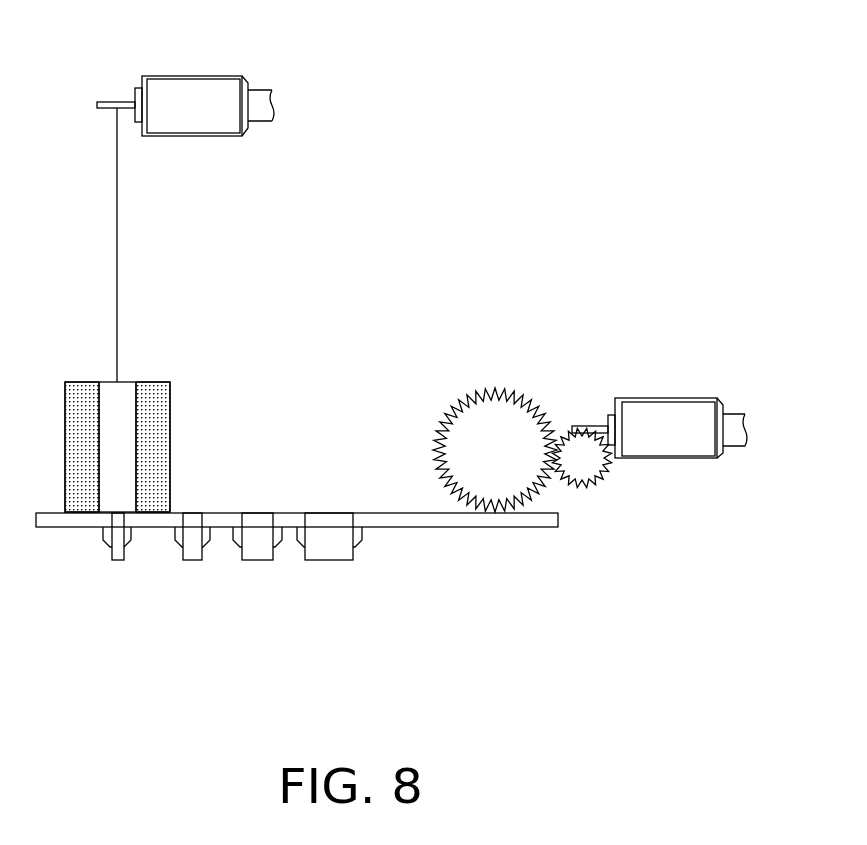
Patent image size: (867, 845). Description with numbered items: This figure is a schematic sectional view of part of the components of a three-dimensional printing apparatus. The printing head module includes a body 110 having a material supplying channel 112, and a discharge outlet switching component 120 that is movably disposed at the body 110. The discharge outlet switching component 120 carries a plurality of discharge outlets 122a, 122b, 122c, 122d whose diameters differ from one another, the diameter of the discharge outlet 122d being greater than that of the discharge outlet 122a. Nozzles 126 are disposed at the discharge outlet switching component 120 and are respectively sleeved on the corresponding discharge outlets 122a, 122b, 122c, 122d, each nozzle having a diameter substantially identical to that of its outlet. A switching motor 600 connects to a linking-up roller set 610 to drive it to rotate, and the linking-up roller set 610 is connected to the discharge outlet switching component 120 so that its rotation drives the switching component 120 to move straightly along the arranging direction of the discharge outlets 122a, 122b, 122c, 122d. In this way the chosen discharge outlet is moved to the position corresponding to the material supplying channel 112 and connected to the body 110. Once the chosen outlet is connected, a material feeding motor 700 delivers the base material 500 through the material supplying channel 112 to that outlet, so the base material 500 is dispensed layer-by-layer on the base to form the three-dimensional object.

The material feeding motor 700 is at (193, 76).
The base material 500 is at (119, 317).
The body 110 is at (156, 431).
The material supplying channel 112 is at (122, 473).
The discharge outlet switching component 120 is at (560, 522).
The discharge outlet 122a is at (117, 562).
The discharge outlet 122b is at (192, 561).
The discharge outlet 122c is at (256, 561).
The discharge outlet 122d is at (330, 561).
The nozzle 126 is at (102, 532).
The linking-up roller set 610 is at (495, 430).
The switching motor 600 is at (667, 398).